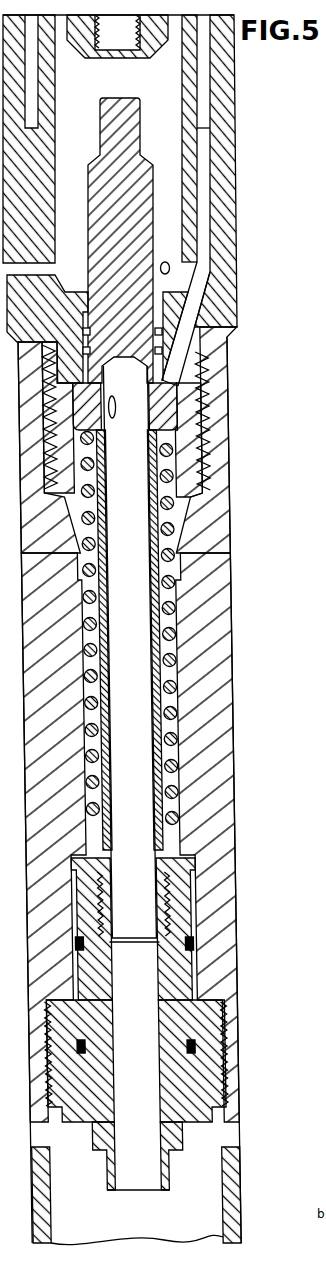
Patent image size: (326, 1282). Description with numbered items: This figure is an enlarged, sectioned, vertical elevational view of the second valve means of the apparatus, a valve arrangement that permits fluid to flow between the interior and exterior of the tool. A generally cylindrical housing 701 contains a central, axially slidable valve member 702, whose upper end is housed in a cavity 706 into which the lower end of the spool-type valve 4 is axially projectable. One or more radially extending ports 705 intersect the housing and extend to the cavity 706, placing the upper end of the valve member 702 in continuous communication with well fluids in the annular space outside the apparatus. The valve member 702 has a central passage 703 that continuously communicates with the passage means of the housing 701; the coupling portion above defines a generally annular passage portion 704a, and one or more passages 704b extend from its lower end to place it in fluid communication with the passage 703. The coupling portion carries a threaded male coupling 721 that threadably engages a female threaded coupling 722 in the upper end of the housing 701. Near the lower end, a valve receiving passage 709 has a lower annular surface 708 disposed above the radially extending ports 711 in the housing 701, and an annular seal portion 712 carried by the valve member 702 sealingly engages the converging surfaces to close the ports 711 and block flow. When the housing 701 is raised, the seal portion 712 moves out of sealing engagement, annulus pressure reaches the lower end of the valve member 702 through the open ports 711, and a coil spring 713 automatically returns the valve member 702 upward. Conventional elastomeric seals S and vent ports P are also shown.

The spool-type valve 4 is at (153, 34).
The cavity 706 is at (136, 86).
The annular passage portion 704a is at (205, 232).
The passage 704b is at (205, 88).
The valve member 702 is at (138, 185).
The radially extending port 705 is at (170, 269).
The seal S is at (173, 335).
The threaded male coupling 721 is at (185, 398).
The female threaded coupling 722 is at (213, 447).
The housing 701 is at (213, 780).
The vent port P is at (157, 620).
The central passage 703 is at (125, 693).
The coil spring 713 is at (168, 713).
The valve receiving passage 709 is at (182, 862).
The annular seal portion 712 is at (167, 990).
The lower annular surface 708 is at (197, 1088).
The radially extending port 711 is at (233, 1137).